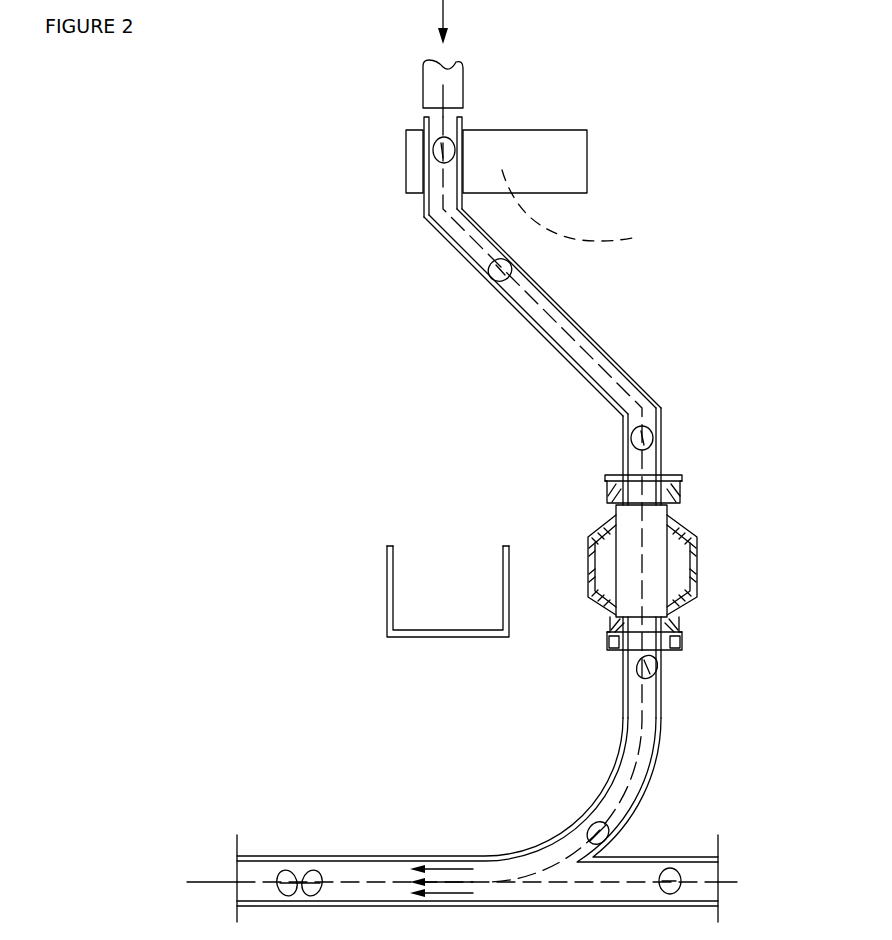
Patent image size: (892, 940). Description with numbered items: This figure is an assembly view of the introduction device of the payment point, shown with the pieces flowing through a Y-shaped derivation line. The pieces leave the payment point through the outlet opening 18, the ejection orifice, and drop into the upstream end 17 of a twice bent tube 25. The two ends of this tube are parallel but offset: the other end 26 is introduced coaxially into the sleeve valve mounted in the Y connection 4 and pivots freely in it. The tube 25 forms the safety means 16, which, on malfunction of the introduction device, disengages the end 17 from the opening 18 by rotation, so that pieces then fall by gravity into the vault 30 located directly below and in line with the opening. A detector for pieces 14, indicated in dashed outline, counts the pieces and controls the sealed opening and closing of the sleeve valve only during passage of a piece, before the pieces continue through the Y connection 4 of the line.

The Y connection 4 is at (652, 795).
The detector for pieces 14 is at (585, 208).
The safety means 16 is at (587, 152).
The upstream end 17 is at (463, 117).
The outlet opening 18 is at (423, 75).
The twice bent tube 25 is at (517, 308).
The end 26 is at (662, 417).
The vault 30 is at (388, 630).